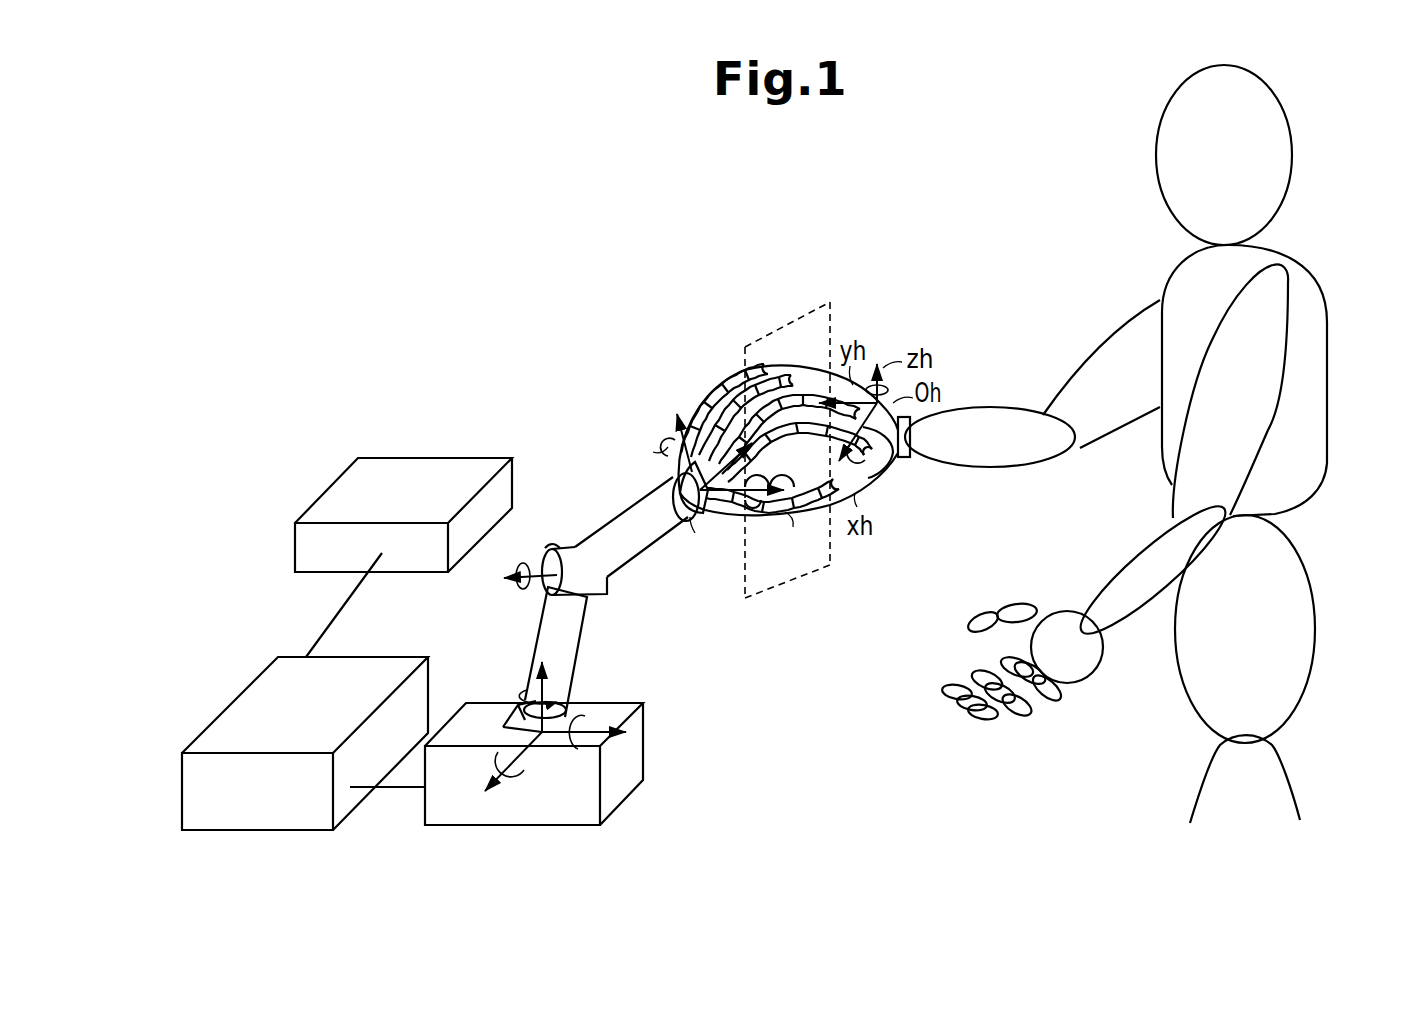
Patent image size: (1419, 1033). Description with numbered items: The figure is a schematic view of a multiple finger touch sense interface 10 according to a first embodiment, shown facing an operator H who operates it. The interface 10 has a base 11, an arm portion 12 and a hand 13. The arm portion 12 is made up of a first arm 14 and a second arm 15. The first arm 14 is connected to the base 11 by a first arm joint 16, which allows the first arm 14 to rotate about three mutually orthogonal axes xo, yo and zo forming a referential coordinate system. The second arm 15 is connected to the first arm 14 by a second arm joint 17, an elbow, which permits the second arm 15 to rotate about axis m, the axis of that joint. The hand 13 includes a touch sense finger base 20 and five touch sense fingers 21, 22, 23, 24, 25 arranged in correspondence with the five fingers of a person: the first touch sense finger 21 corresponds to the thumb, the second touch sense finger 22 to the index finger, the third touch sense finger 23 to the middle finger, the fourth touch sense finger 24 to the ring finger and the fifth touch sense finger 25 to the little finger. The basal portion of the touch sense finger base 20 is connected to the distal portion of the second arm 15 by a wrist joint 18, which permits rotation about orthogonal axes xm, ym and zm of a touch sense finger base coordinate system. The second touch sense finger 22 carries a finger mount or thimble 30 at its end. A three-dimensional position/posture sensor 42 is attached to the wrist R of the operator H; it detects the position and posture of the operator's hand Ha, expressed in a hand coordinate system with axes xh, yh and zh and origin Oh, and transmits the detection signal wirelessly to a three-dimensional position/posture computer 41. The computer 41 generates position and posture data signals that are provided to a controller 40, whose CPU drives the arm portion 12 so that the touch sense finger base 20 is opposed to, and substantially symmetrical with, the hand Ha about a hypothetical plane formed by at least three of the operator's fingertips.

The multiple finger touch sense interface 10 is at (590, 410).
The base 11 is at (643, 765).
The arm portion 12 is at (617, 632).
The hand 13 is at (705, 385).
The first arm 14 is at (582, 630).
The second arm 15 is at (630, 548).
The first arm joint 16 is at (510, 708).
The second arm joint 17 is at (560, 550).
The wrist joint 18 is at (672, 473).
The touch sense finger base 20 is at (710, 520).
The first touch sense finger 21 is at (763, 520).
The second touch sense finger 22 is at (710, 400).
The third touch sense finger 23 is at (730, 387).
The fourth touch sense finger 24 is at (778, 383).
The fifth touch sense finger 25 is at (777, 448).
The finger mount or thimble 30 is at (790, 567).
The controller 40 is at (247, 698).
The three-dimensional position/posture computer 41 is at (425, 463).
The three-dimensional position/posture sensor 42 is at (910, 432).
The operator H is at (1313, 417).
The hand of the operator Ha is at (888, 468).
The wrist of the operator R is at (920, 457).